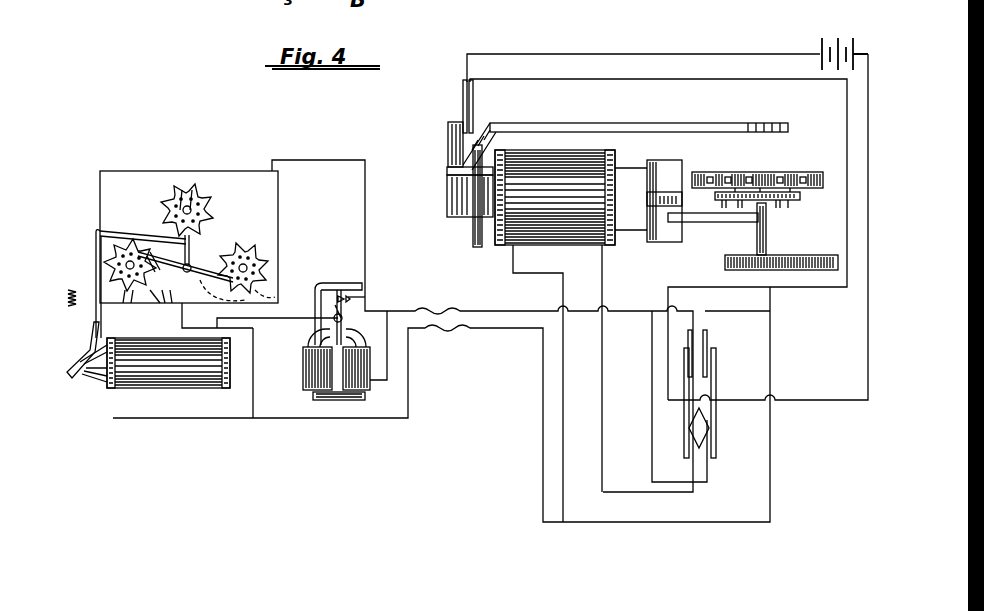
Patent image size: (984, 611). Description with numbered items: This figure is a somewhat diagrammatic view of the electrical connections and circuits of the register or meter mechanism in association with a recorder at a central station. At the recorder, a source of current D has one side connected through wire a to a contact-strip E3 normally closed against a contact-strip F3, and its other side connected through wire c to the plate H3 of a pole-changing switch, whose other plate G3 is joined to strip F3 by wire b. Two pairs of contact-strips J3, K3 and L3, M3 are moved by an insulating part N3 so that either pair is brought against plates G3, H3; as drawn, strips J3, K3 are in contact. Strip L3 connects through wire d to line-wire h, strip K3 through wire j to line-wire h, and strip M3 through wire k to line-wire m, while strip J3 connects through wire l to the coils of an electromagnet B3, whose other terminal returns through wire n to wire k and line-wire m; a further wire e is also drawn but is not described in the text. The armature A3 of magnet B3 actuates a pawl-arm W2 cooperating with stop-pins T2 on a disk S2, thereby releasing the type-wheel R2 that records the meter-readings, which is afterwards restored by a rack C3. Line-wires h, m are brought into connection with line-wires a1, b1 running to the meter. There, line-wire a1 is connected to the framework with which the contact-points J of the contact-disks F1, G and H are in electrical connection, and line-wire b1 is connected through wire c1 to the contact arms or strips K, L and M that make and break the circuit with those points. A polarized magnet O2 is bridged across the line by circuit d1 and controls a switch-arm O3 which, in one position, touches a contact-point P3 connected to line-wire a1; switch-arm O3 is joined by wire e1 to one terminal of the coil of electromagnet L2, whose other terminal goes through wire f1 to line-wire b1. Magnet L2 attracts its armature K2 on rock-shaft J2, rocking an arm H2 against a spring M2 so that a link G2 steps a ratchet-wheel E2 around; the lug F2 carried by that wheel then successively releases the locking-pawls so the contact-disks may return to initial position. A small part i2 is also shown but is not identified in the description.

The wire a is at (622, 54).
The wire b is at (668, 79).
The wire c is at (868, 120).
The wire d is at (652, 311).
The circuit wire e is at (800, 403).
The source of current D is at (845, 37).
The line-wire a1 is at (365, 186).
The line-wire b1 is at (273, 420).
The wire c1 is at (253, 345).
The circuit d1 is at (408, 370).
The wire e1 is at (300, 303).
The wire f1 is at (217, 418).
The line-wire h is at (505, 311).
The wire n is at (563, 470).
The wire l is at (603, 368).
The line-wire m is at (543, 375).
The wire k is at (770, 368).
The wire j is at (652, 385).
The contact arm or strip K is at (189, 251).
The link G2 is at (160, 200).
The contact-points J is at (185, 190).
The disk G is at (205, 200).
The rock-shaft J2 is at (105, 290).
The disk H is at (100, 232).
The contact arm or strip L is at (185, 255).
The contact arm or strip M is at (148, 250).
The contact-disk F1 is at (231, 253).
The lug or projection F2 is at (283, 271).
The ratchet-wheel E2 is at (161, 312).
The spring i2 is at (72, 273).
The arm H2 is at (73, 256).
The spring M2 is at (77, 278).
The armature K2 is at (72, 378).
The electromagnet L2 is at (178, 388).
The polarized magnet O2 is at (352, 390).
The switch-arm O3 is at (337, 282).
The contact-point P3 is at (365, 300).
The contact-strip E3 is at (460, 97).
The contact-strip F3 is at (478, 110).
The electromagnet B3 is at (565, 150).
The armature A3 is at (672, 160).
The pawl-arm W2 is at (708, 222).
The type-wheel R2 is at (790, 160).
The disk S2 is at (800, 200).
The stop-pins T2 is at (781, 246).
The rack C3 is at (812, 270).
The side plate or contact-strip G3 is at (686, 408).
The side plate or contact-strip H3 is at (716, 435).
The contact-strip L3 is at (688, 345).
The contact-strip M3 is at (718, 334).
The insulating arm or part N3 is at (716, 400).
The contact-strip K3 is at (708, 462).
The contact-strip J3 is at (718, 490).